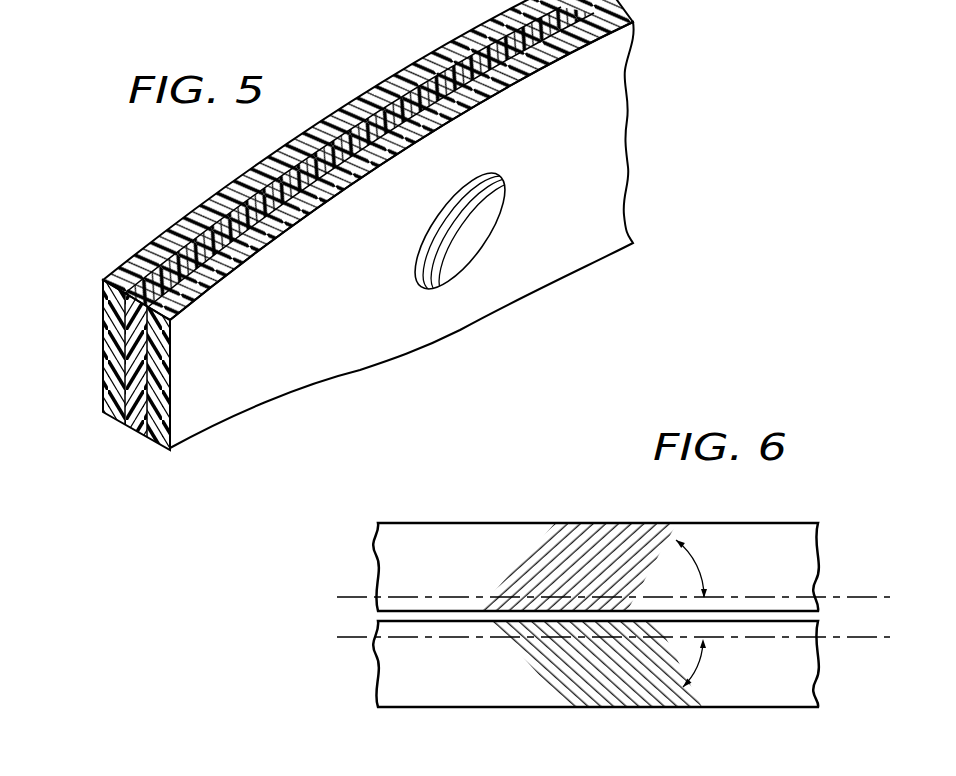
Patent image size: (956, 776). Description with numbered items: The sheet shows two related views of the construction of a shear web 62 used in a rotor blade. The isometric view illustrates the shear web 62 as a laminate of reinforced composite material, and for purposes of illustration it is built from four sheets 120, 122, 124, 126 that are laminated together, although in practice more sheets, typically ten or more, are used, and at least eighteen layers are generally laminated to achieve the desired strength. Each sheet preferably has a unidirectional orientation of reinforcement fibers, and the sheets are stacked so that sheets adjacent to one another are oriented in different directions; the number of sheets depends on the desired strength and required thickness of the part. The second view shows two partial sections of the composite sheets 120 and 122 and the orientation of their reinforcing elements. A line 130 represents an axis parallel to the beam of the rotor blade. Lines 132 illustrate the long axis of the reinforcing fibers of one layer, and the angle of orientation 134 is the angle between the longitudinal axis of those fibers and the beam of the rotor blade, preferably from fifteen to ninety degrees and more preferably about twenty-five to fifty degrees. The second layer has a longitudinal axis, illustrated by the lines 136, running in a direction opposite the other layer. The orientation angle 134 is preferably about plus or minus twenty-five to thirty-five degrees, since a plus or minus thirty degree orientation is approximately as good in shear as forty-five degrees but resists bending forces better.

In FIG. 5, the shear web 62 is at (627, 141).
In FIG. 5, the sheet 120 is at (100, 406).
In FIG. 6, the sheet 120 is at (430, 708).
In FIG. 5, the sheet 122 is at (115, 420).
In FIG. 6, the sheet 122 is at (450, 523).
In FIG. 5, the sheet 124 is at (138, 437).
In FIG. 5, the sheet 126 is at (160, 450).
In FIG. 6, the line 130 is at (855, 597).
In FIG. 6, the reinforcing elements 132 is at (637, 527).
In FIG. 6, the angle of orientation 134 is at (696, 563).
In FIG. 6, the reinforcing elements 136 is at (530, 658).